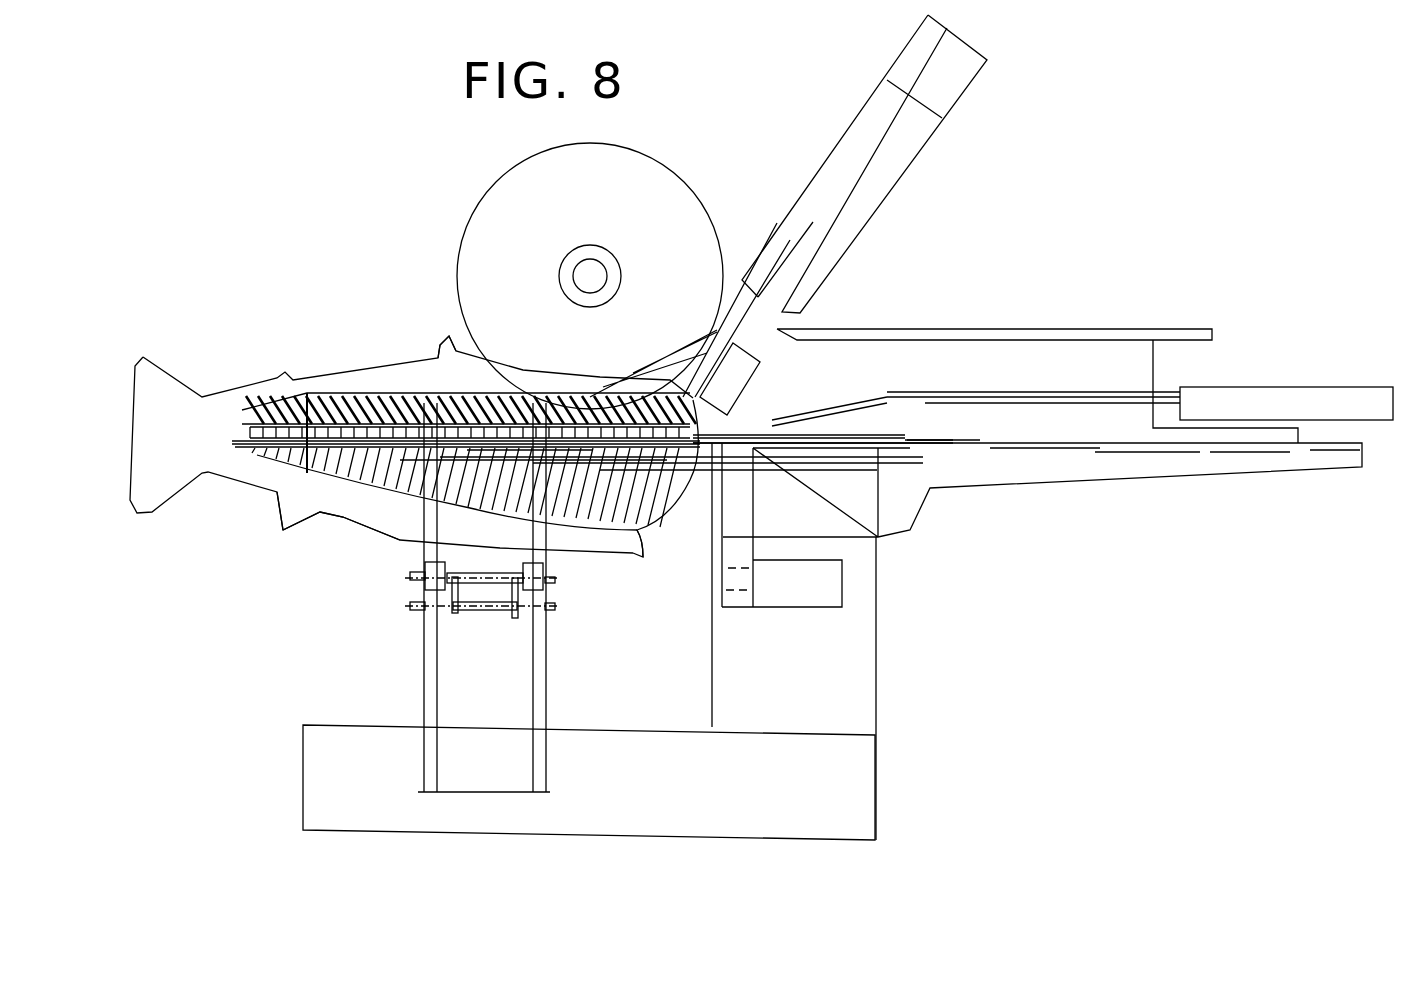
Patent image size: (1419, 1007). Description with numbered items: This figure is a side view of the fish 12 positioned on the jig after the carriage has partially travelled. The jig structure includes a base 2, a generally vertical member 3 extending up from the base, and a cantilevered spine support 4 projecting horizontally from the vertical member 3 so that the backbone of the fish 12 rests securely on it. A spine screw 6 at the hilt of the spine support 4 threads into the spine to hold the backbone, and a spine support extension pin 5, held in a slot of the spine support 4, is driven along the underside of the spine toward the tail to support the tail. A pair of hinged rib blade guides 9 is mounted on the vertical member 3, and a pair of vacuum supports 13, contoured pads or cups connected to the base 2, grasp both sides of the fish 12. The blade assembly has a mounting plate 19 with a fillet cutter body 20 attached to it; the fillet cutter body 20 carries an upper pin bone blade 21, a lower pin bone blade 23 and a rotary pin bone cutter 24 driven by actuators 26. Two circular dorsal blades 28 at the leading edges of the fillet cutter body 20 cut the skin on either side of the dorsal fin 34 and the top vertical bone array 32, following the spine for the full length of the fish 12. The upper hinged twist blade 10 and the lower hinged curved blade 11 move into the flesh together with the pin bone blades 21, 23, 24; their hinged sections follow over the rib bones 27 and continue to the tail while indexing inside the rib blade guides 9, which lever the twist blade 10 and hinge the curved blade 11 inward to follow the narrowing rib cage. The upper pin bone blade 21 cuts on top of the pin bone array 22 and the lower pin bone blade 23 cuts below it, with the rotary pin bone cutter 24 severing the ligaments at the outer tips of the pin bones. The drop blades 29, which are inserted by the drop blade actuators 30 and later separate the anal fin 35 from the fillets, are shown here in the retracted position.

The base 2 is at (878, 790).
The vertical member 3 is at (878, 680).
The spine support 4 is at (500, 460).
The spine support extension pin 5 is at (232, 452).
The spine screw 6 is at (724, 418).
The hinged rib blade guides 9 is at (778, 493).
The upper hinged twist blade 10 is at (983, 455).
The lower hinged curved blade 11 is at (377, 500).
The fish 12 is at (188, 376).
The vacuum supports 13 is at (305, 473).
The mounting plate 19 is at (1190, 330).
The fillet cutter body 20 is at (1153, 365).
The upper pin bone blade 21 is at (825, 414).
The pin bone array 22 is at (530, 400).
The lower pin bone blade 23 is at (852, 402).
The rotary pin bone cutter 24 is at (880, 400).
The actuators 26 is at (1295, 388).
The rib bones 27 is at (640, 535).
The circular dorsal blades 28 is at (693, 192).
The drop blades 29 is at (745, 312).
The drop blade actuators 30 is at (918, 158).
The top vertical bone array 32 is at (320, 412).
The dorsal fin 34 is at (443, 342).
The anal fin 35 is at (283, 530).